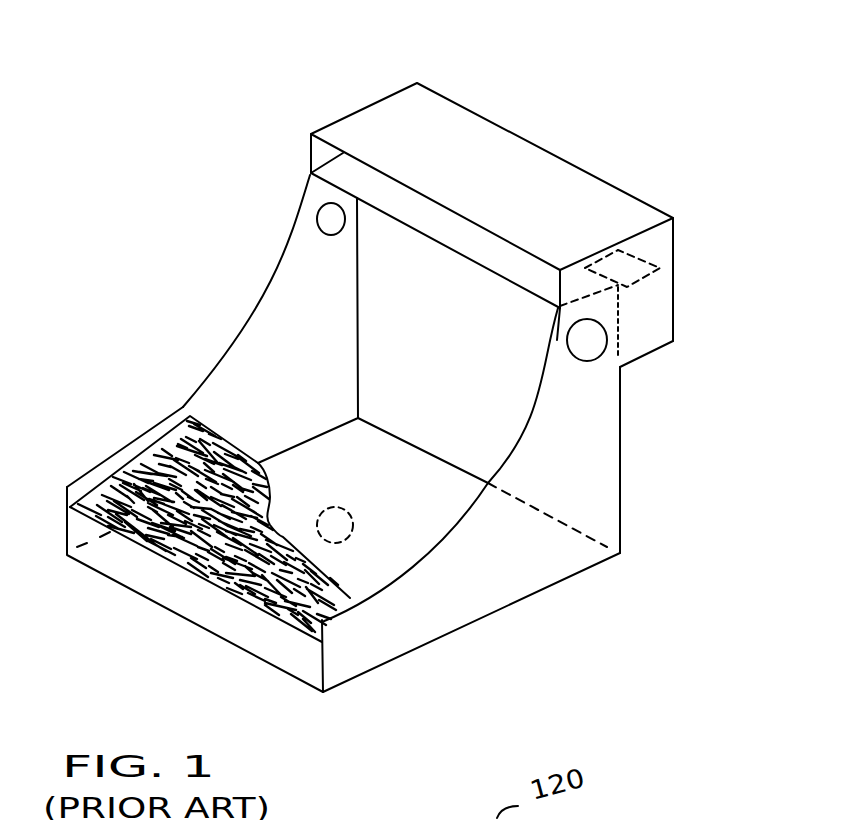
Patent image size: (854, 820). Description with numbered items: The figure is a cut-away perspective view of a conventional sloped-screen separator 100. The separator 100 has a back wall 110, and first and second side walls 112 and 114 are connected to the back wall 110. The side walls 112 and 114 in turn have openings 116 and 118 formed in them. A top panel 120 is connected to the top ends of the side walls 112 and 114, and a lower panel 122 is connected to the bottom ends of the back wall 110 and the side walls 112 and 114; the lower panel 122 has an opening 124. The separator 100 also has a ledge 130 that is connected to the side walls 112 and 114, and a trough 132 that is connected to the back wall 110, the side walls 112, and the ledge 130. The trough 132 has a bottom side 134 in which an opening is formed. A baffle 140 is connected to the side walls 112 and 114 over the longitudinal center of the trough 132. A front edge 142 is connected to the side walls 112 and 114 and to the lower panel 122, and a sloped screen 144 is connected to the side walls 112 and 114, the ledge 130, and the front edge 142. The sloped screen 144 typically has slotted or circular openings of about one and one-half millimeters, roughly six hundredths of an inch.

The sloped-screen separator 100 is at (540, 68).
The back wall 110 is at (620, 440).
The first side wall 112 is at (545, 567).
The second side wall 114 is at (215, 397).
The opening 116 is at (587, 350).
The opening 118 is at (330, 237).
The top panel 120 is at (509, 158).
The lower panel 122 is at (168, 570).
The opening 124 is at (338, 512).
The ledge 130 is at (535, 278).
The trough 132 is at (657, 308).
The bottom side 134 is at (650, 348).
The baffle 140 is at (652, 275).
The front edge 142 is at (237, 617).
The sloped screen 144 is at (132, 463).